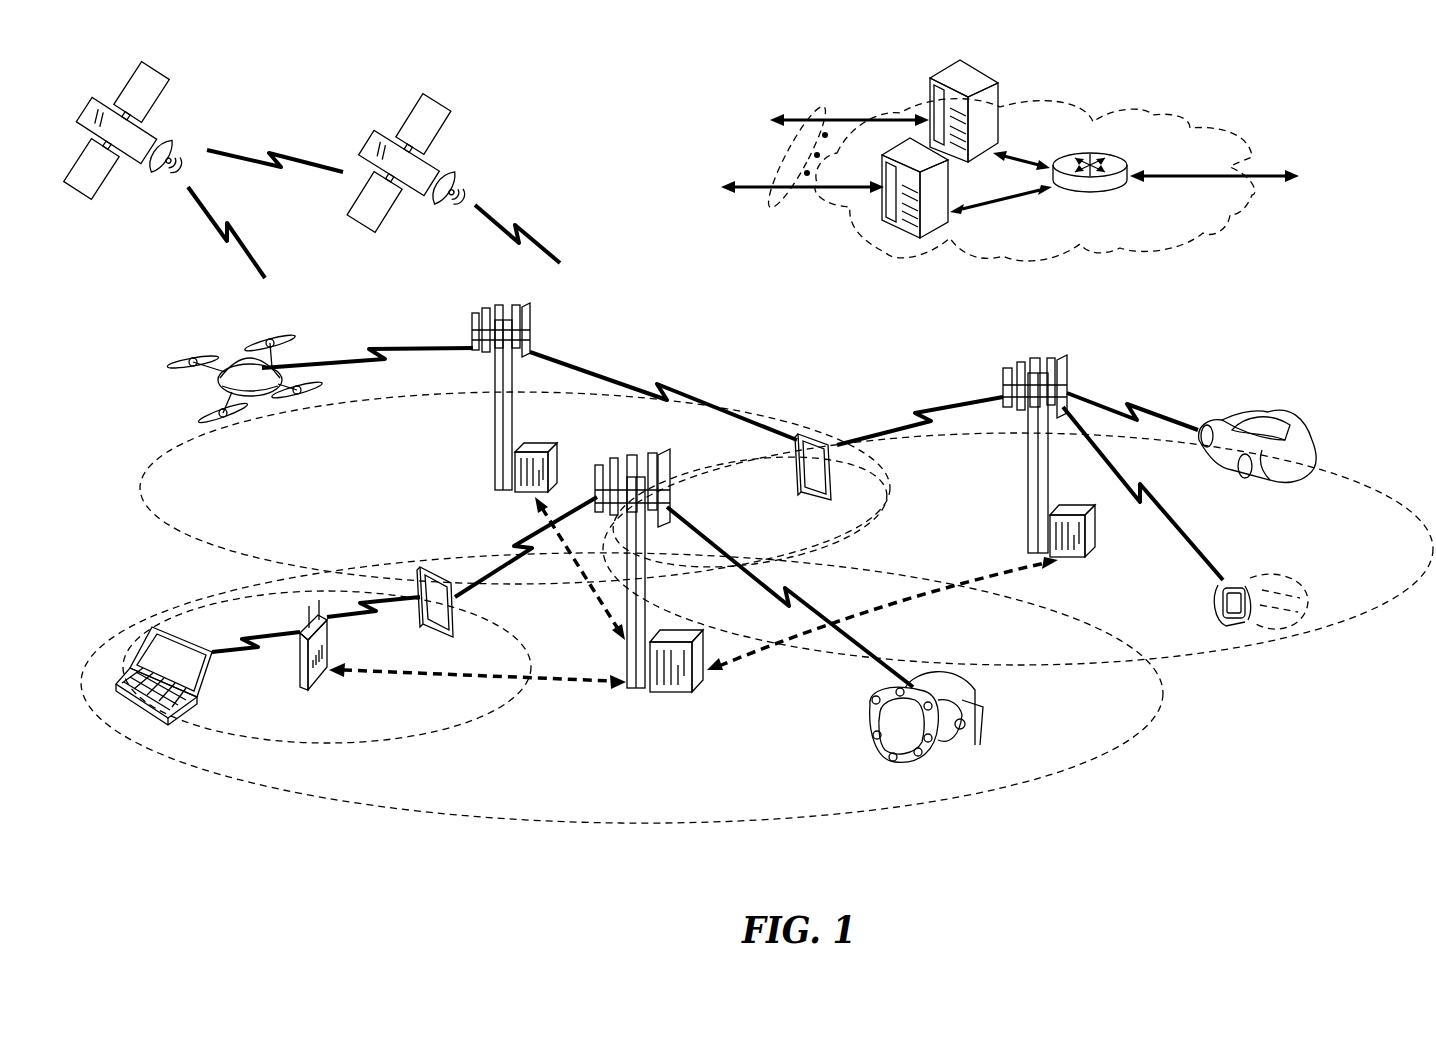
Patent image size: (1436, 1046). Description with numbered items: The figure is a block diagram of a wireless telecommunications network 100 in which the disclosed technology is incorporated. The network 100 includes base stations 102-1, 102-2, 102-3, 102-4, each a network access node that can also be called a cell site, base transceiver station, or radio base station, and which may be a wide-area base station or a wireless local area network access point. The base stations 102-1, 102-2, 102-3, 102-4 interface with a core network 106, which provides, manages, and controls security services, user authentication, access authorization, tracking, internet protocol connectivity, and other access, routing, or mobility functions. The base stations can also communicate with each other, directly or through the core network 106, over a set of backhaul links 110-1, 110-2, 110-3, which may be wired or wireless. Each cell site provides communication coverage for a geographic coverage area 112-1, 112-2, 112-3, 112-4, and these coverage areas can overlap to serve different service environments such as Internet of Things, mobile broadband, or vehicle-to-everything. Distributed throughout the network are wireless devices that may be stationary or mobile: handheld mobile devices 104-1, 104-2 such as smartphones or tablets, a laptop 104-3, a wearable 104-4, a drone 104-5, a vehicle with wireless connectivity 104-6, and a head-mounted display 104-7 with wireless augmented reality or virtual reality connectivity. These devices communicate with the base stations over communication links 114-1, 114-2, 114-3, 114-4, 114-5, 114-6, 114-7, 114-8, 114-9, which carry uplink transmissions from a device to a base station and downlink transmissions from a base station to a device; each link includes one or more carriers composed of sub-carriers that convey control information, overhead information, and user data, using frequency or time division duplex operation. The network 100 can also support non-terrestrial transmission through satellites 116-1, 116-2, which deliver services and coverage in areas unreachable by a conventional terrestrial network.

The wireless telecommunications network 100 is at (1352, 133).
The base station 102-1 is at (637, 693).
The base station 102-2 is at (495, 437).
The base station 102-3 is at (1028, 473).
The base station 102-4 is at (298, 673).
The handheld mobile device 104-1 is at (453, 615).
The handheld mobile device 104-2 is at (797, 473).
The laptop 104-3 is at (142, 715).
The wearable 104-4 is at (1245, 580).
The drone 104-5 is at (257, 403).
The vehicle with wireless connectivity 104-6 is at (1280, 423).
The head-mounted display 104-7 is at (983, 707).
The core network 106 is at (1122, 240).
The backhaul link 110-1 is at (367, 672).
The backhaul link 110-2 is at (953, 598).
The backhaul link 110-3 is at (597, 593).
The geographic coverage area 112-1 is at (562, 827).
The geographic coverage area 112-2 is at (435, 732).
The geographic coverage area 112-3 is at (207, 545).
The geographic coverage area 112-4 is at (1340, 468).
The communication link 114-1 is at (807, 597).
The communication link 114-2 is at (527, 542).
The communication link 114-3 is at (223, 650).
The communication link 114-4 is at (370, 615).
The communication link 114-5 is at (377, 352).
The communication link 114-6 is at (670, 390).
The communication link 114-7 is at (918, 410).
The communication link 114-8 is at (1160, 513).
The communication link 114-9 is at (1130, 400).
The satellite 116-1 is at (165, 141).
The satellite 116-2 is at (462, 172).